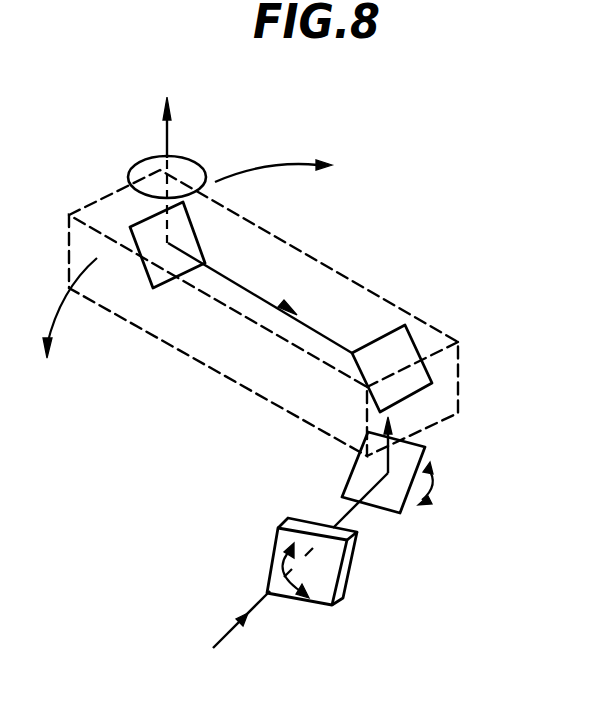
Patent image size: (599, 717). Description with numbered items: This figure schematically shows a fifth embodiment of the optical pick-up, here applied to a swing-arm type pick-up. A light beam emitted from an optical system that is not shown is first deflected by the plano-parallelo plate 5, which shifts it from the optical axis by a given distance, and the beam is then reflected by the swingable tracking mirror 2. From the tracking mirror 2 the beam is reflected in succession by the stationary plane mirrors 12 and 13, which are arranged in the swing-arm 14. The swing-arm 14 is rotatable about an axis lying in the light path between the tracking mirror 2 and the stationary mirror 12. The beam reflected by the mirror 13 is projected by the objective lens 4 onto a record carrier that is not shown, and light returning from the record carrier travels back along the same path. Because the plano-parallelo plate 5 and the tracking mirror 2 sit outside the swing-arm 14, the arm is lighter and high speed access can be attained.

The swingable tracking mirror 2 is at (420, 456).
The objective lens 4 is at (197, 165).
The plano-parallelo plate 5 is at (345, 575).
The stationary plane mirror 12 is at (426, 330).
The stationary plane mirror 13 is at (170, 265).
The swing-arm 14 is at (333, 273).